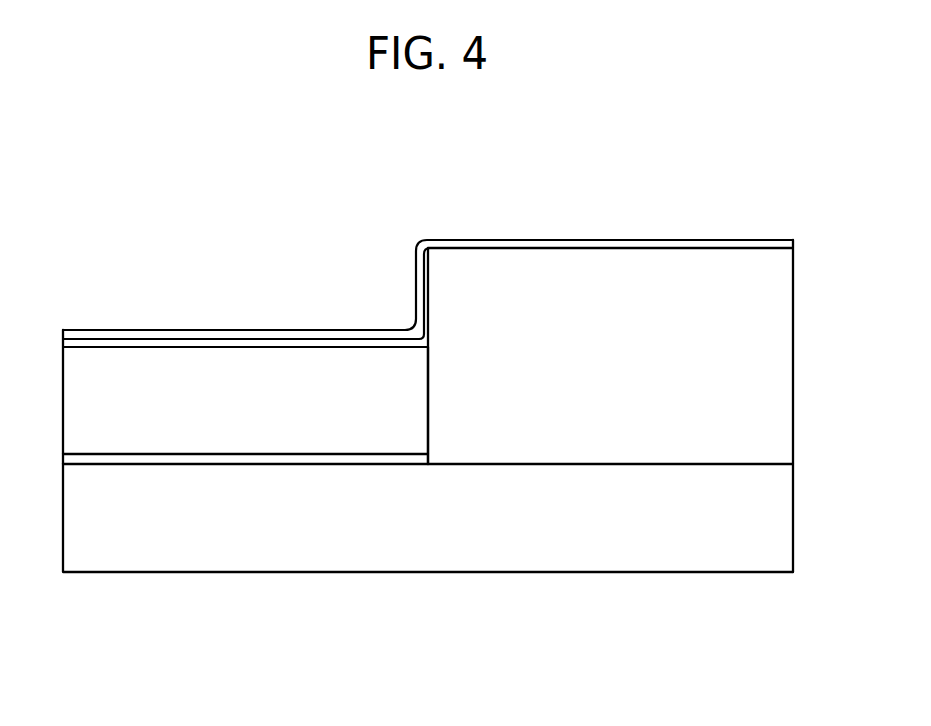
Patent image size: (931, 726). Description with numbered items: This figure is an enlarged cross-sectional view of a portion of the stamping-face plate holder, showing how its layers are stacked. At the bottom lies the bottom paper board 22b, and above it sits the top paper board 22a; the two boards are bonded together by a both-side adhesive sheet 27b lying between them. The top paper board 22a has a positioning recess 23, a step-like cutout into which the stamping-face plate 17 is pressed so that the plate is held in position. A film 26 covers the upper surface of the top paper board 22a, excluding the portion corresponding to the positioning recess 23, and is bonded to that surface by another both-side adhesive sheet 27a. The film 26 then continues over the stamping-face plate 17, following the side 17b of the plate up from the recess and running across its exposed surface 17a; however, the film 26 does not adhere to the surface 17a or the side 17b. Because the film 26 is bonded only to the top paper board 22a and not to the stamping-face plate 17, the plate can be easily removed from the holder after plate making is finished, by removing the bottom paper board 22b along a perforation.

The stamping-face plate 17 is at (490, 274).
The surface of the stamping-face plate 17a is at (622, 243).
The side of the stamping-face plate 17b is at (422, 287).
The film 26 is at (88, 333).
The both-side adhesive sheet 27a is at (307, 343).
The both-side adhesive sheet 27b is at (158, 460).
The top paper board 22a is at (221, 429).
The bottom paper board 22b is at (325, 547).
The positioning recess 23 is at (429, 406).